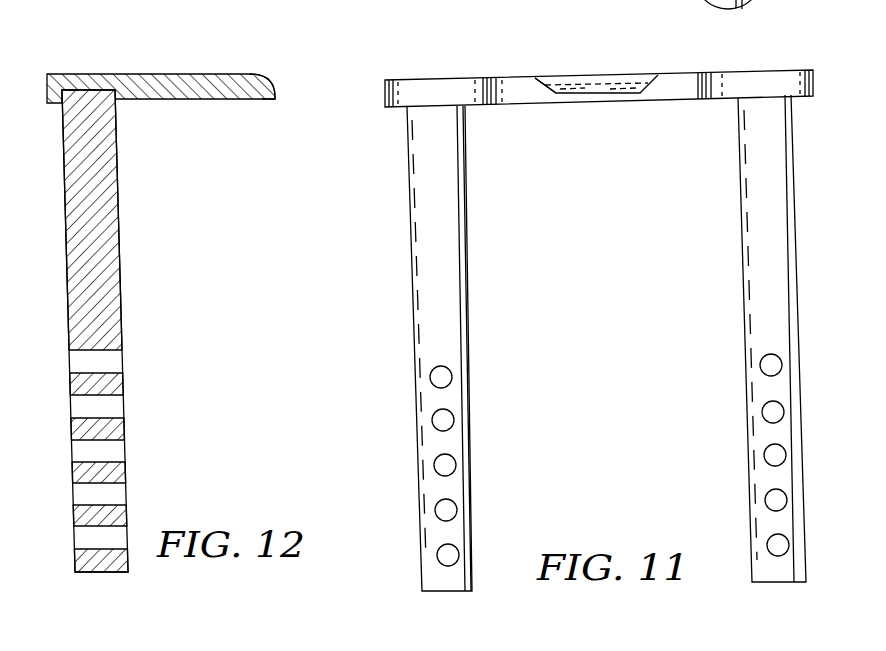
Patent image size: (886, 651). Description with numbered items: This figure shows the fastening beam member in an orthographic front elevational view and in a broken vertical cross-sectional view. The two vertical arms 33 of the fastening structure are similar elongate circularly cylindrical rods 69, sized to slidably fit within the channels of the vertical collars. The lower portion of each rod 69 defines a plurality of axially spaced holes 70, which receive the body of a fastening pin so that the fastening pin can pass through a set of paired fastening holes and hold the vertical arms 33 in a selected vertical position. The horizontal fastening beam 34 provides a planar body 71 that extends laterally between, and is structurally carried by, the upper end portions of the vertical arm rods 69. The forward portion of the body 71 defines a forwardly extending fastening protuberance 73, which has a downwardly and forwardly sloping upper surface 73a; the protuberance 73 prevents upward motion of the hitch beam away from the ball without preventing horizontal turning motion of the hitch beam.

In FIG. 12, the vertical arm 33 is at (132, 331).
In FIG. 11, the vertical arm 33 is at (579, 343).
In FIG. 12, the horizontal fastening beam 34 is at (205, 109).
In FIG. 11, the horizontal fastening beam 34 is at (599, 103).
In FIG. 12, the rod 69 is at (121, 331).
In FIG. 11, the rod 69 is at (579, 343).
In FIG. 12, the holes 70 is at (103, 403).
In FIG. 11, the holes 70 is at (445, 382).
In FIG. 12, the planar body 71 is at (205, 89).
In FIG. 11, the planar body 71 is at (599, 91).
In FIG. 12, the fastening protuberance 73 is at (248, 100).
In FIG. 11, the fastening protuberance 73 is at (600, 103).
In FIG. 12, the sloping upper surface 73a is at (272, 73).
In FIG. 11, the sloping upper surface 73a is at (597, 87).